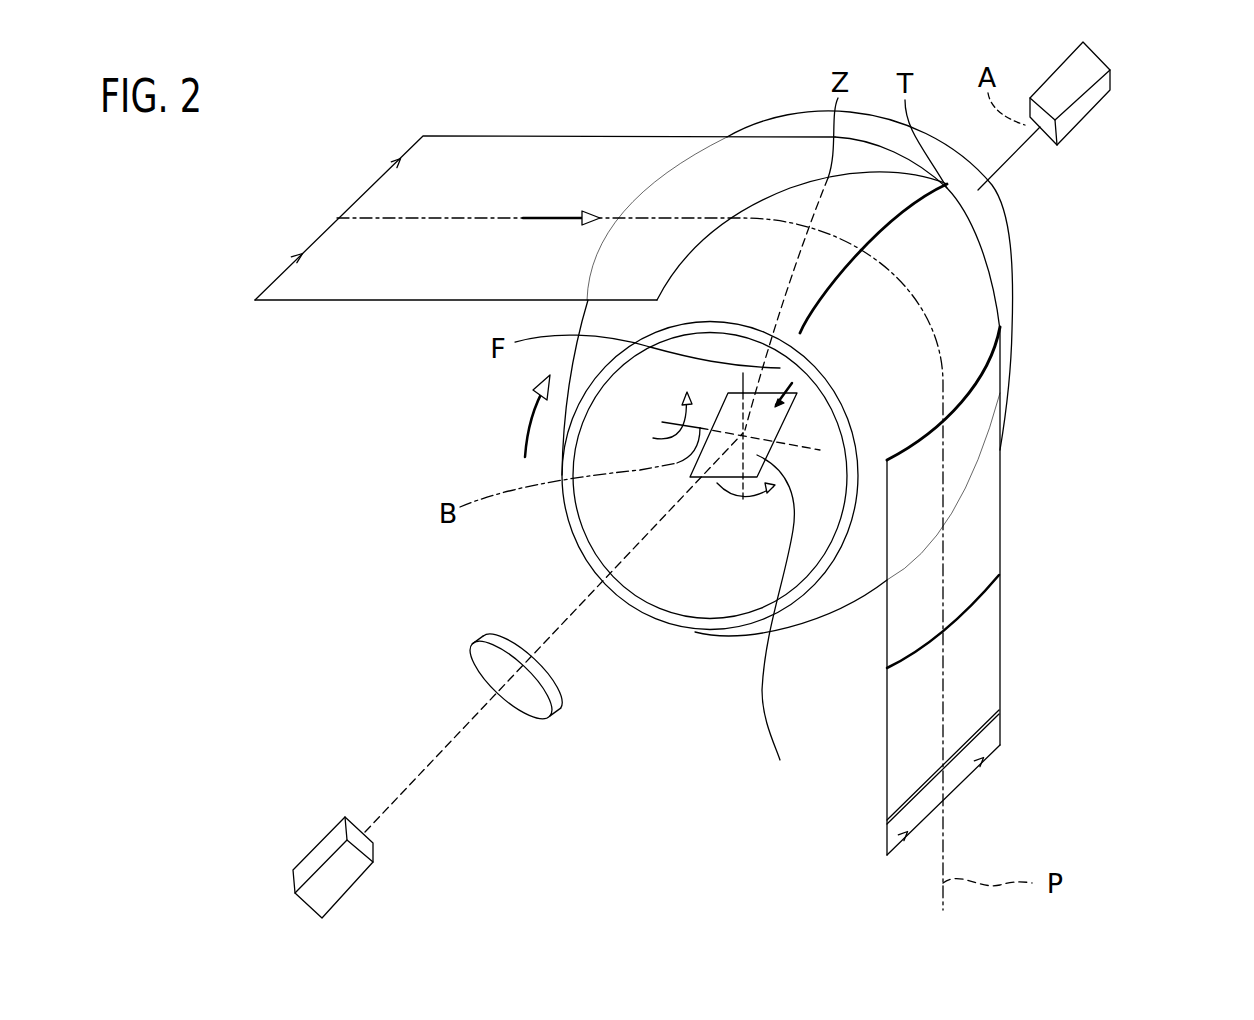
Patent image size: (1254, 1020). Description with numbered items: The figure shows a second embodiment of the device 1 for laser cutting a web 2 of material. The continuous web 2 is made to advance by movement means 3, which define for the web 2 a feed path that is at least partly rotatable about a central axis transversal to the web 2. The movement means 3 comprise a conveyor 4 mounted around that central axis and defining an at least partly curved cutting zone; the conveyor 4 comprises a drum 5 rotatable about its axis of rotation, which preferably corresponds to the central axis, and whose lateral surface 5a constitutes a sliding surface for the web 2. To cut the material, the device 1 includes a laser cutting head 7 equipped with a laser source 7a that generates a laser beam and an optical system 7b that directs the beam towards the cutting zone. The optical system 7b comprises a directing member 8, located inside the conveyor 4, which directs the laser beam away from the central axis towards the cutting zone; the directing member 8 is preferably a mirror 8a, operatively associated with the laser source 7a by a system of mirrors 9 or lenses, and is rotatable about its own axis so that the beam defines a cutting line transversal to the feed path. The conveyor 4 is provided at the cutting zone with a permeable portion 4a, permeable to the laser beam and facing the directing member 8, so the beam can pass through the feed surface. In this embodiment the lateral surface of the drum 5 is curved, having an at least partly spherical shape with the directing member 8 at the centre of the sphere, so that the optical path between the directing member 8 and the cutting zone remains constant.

The device for laser cutting 1 is at (1043, 222).
The web of material 2 is at (565, 188).
The movement means 3 is at (608, 703).
The conveyor 4 is at (705, 638).
The permeable portion 4a is at (700, 240).
The drum 5 is at (667, 628).
The ring surface 5a is at (853, 567).
The laser cutting head 7 is at (375, 697).
The laser source 7a is at (317, 848).
The optical system 7b is at (537, 718).
The directing member 8 is at (797, 393).
The mirror 8a is at (779, 624).
The system of mirrors 9 is at (1075, 65).